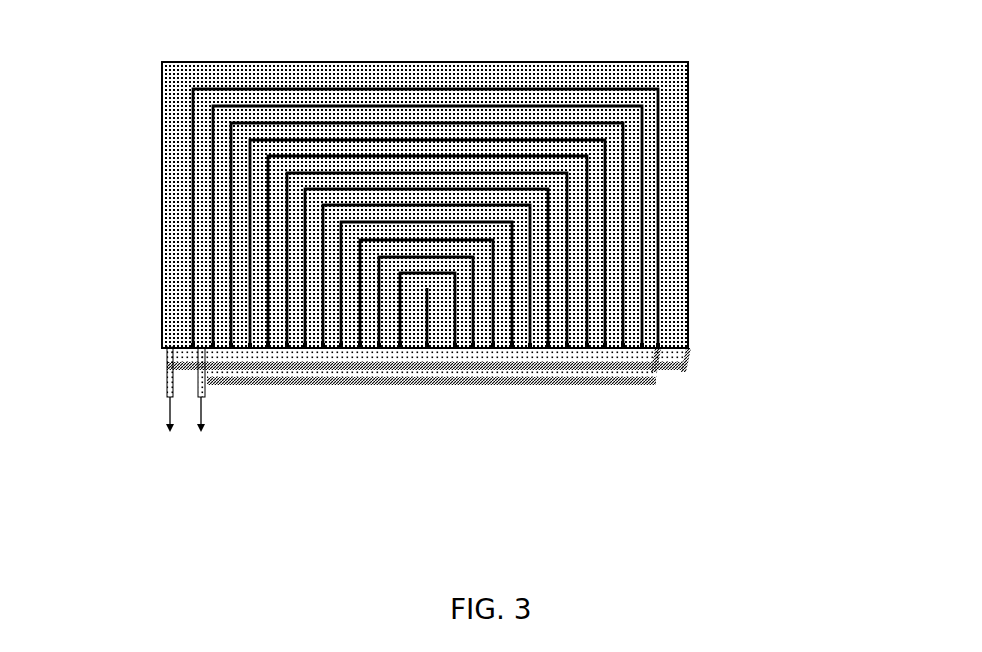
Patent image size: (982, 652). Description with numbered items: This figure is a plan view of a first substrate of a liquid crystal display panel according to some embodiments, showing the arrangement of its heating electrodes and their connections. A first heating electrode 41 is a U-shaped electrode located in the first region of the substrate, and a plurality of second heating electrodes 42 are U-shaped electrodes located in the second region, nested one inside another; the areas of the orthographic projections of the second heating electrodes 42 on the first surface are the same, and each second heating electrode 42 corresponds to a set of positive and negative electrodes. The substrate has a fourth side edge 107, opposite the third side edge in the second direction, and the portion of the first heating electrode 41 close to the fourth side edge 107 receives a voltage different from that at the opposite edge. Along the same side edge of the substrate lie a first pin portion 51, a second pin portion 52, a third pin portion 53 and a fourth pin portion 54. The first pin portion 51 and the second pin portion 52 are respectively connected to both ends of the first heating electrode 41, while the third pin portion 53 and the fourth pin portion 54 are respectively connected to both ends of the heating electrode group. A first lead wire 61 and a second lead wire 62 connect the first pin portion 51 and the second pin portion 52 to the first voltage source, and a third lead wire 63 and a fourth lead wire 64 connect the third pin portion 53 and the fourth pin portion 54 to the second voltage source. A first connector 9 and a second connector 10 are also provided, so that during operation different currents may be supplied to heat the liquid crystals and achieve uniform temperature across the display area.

The first heating electrode 41 is at (672, 208).
The second heating electrode 42 is at (630, 153).
The first pin portion 51 is at (167, 347).
The second pin portion 52 is at (198, 350).
The third pin portion 53 is at (657, 347).
The fourth pin portion 54 is at (688, 347).
The first lead wire 61 is at (170, 357).
The second lead wire 62 is at (200, 357).
The third lead wire 63 is at (368, 380).
The fourth lead wire 64 is at (430, 370).
The fourth side edge 107 is at (588, 347).
The first connector 9 is at (170, 432).
The second connector 10 is at (202, 433).